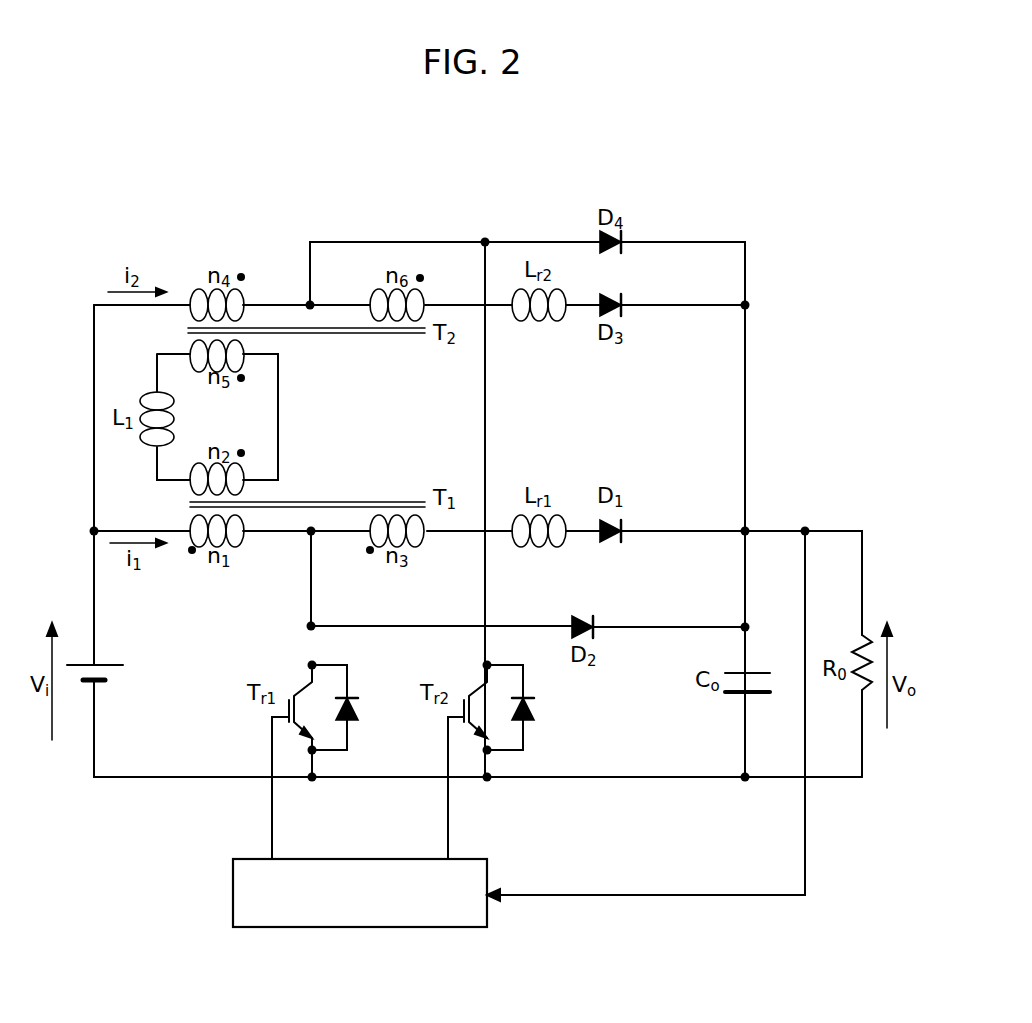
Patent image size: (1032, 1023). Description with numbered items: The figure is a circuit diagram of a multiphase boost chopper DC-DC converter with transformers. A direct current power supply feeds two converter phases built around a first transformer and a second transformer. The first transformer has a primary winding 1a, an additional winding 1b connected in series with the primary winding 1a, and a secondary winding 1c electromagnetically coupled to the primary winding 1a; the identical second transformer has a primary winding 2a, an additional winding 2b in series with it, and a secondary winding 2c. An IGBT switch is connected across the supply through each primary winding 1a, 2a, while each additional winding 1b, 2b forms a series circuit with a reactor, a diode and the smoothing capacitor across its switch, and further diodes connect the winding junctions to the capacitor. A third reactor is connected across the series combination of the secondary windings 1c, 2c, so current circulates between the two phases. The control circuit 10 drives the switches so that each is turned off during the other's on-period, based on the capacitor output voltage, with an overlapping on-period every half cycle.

The primary winding 1a is at (214, 580).
The additional winding 1b is at (428, 542).
The secondary winding 1c is at (262, 461).
The primary winding 2a is at (215, 262).
The additional winding 2b is at (370, 291).
The secondary winding 2c is at (262, 368).
The control circuit 10 is at (358, 930).